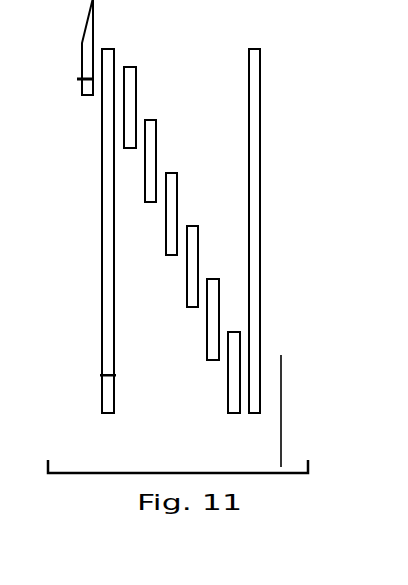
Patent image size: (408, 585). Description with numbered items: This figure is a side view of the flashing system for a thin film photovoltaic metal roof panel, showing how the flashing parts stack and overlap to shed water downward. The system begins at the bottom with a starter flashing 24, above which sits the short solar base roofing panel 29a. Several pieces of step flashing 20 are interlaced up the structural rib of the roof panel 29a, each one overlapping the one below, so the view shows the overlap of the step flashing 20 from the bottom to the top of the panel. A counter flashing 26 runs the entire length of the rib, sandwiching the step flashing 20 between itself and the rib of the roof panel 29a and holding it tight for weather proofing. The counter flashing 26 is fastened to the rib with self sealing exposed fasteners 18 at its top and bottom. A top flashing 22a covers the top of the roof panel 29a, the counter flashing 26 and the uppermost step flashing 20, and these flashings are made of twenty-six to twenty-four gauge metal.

The top flashing 22a is at (88, 45).
The self sealing exposed fastener 18 is at (79, 78).
The counter flashing 26 is at (108, 208).
The step flashing 20 is at (128, 120).
The short solar base roofing panel 29a is at (262, 142).
The starter flashing 24 is at (280, 437).